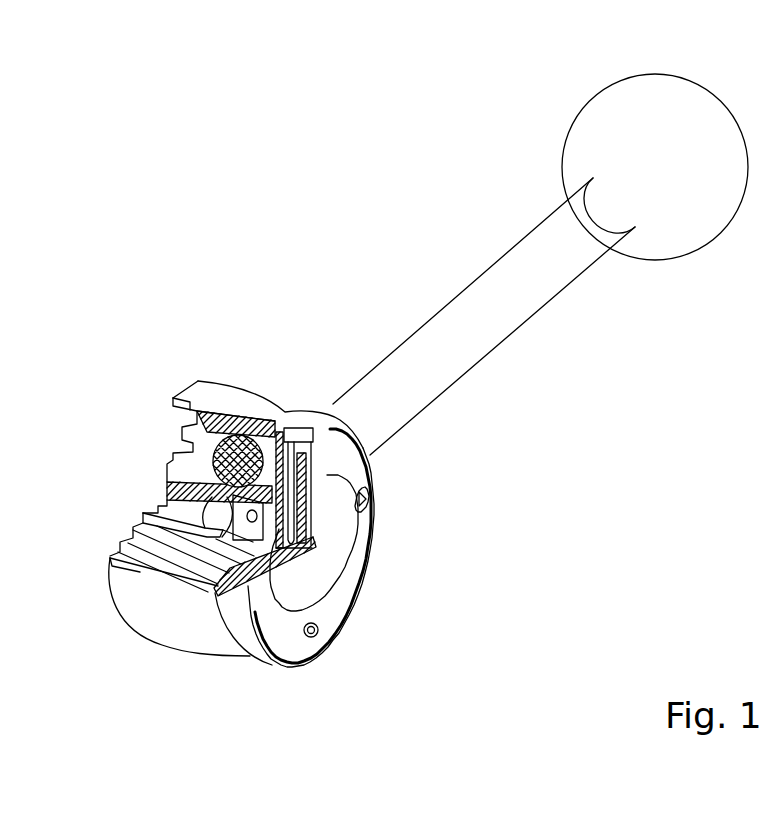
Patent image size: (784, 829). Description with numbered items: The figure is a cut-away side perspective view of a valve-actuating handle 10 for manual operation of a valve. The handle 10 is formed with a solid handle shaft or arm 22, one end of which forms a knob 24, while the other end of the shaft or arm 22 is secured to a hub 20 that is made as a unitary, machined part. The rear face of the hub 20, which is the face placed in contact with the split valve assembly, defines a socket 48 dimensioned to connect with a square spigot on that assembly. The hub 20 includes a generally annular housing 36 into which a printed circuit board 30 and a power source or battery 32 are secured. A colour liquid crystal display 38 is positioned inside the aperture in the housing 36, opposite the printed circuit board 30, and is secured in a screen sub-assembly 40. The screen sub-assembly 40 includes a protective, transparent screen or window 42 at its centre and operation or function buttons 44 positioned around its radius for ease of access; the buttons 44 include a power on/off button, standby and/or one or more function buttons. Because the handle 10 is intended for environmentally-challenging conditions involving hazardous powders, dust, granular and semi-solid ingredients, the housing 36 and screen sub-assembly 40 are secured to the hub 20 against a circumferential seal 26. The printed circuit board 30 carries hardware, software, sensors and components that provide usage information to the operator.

The valve-actuating handle 10 is at (178, 156).
The hub 20 is at (137, 617).
The handle shaft or arm 22 is at (448, 320).
The knob 24 is at (607, 122).
The circumferential seal 26 is at (275, 428).
The printed circuit board 30 is at (282, 450).
The power source or battery 32 is at (240, 460).
The housing 36 is at (241, 641).
The colour liquid crystal display 38 is at (282, 565).
The screen sub-assembly 40 is at (281, 641).
The protective transparent screen or window 42 is at (330, 560).
The operation or function buttons 44 is at (365, 503).
The socket 48 is at (195, 503).